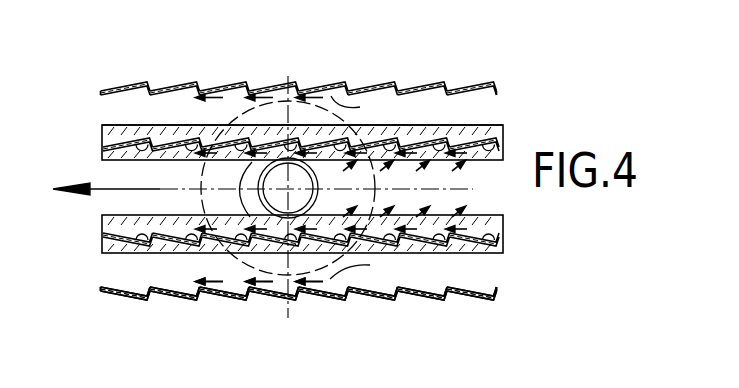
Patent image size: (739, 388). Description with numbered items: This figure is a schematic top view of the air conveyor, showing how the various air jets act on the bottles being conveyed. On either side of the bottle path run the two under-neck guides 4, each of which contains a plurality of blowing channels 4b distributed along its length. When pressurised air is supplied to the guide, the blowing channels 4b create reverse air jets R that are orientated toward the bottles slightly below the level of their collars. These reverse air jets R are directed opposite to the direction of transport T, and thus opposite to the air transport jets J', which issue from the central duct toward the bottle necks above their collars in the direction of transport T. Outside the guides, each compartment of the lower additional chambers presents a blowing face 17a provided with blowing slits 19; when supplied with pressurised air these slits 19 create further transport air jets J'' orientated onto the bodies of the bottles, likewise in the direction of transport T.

The blowing slits 19 is at (452, 80).
The blowing face 17a is at (105, 289).
The under-neck guide 4 is at (102, 155).
The blowing channels 4b is at (107, 127).
The reverse air jets R is at (463, 162).
The direction of transport T is at (106, 179).
The air transport jets J' is at (234, 189).
The transport air jets J'' is at (359, 187).